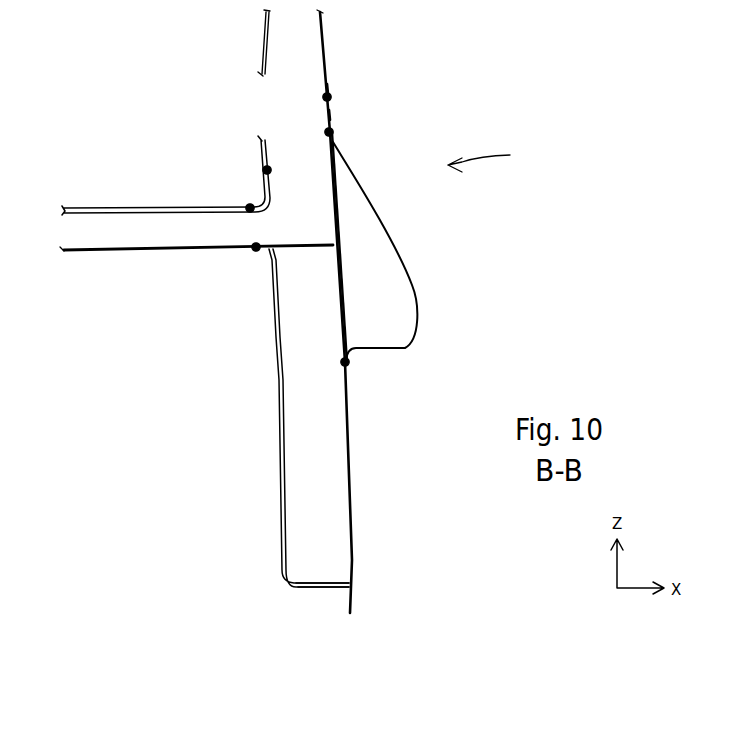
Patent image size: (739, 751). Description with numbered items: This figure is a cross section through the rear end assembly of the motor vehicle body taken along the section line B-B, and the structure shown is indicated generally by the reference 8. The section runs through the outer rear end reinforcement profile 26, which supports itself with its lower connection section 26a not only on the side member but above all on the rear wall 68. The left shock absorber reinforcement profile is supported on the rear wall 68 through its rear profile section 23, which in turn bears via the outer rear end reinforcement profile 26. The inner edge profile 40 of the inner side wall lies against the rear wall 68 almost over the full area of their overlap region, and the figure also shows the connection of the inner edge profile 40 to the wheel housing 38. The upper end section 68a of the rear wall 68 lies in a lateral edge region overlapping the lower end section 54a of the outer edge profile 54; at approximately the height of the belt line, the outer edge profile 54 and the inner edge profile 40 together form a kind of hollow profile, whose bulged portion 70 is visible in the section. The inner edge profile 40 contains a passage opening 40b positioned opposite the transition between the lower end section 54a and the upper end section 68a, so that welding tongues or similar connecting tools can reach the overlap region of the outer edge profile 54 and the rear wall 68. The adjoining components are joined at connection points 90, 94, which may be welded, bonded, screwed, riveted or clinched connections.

The vehicle body structure 8 is at (486, 161).
The rear profile section 23 is at (125, 252).
The outer rear end reinforcement profile 26 is at (280, 417).
The lower connection section 26a is at (307, 588).
The wheel housing 38 is at (146, 208).
The inner edge profile 40 is at (264, 17).
The passage opening 40b is at (258, 102).
The outer edge profile 54 is at (325, 50).
The lower end section 54a is at (327, 88).
The rear wall 68 is at (343, 305).
The upper end section 68a is at (330, 115).
The bulging portion 70 is at (393, 248).
The connection point 90 is at (333, 134).
The connection point 94 is at (331, 98).